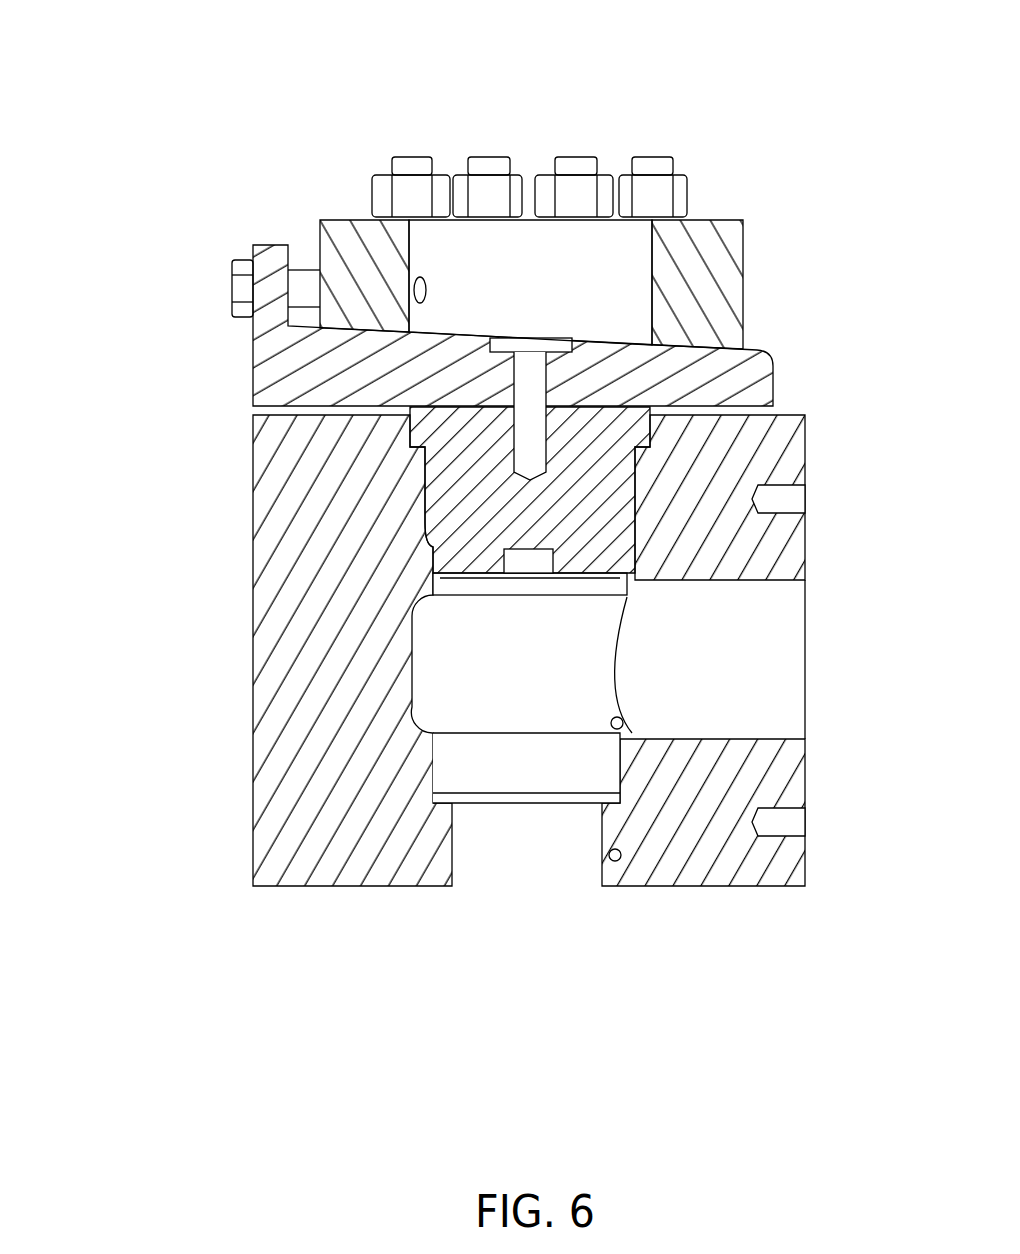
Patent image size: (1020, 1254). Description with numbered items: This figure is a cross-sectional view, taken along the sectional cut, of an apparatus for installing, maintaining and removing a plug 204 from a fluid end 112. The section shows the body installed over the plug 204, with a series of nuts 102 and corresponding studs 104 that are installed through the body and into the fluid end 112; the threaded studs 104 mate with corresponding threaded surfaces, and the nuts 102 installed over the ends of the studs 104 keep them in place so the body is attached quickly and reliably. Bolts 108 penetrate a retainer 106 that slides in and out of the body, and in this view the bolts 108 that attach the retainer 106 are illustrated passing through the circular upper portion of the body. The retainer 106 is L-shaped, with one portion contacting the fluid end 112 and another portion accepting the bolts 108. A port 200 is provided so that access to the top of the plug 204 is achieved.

The studs 104 is at (398, 160).
The nuts 102 is at (375, 184).
The bolts 108 is at (232, 282).
The retainer 106 is at (253, 363).
The port 200 is at (540, 343).
The plug 204 is at (420, 509).
The fluid end 112 is at (286, 882).